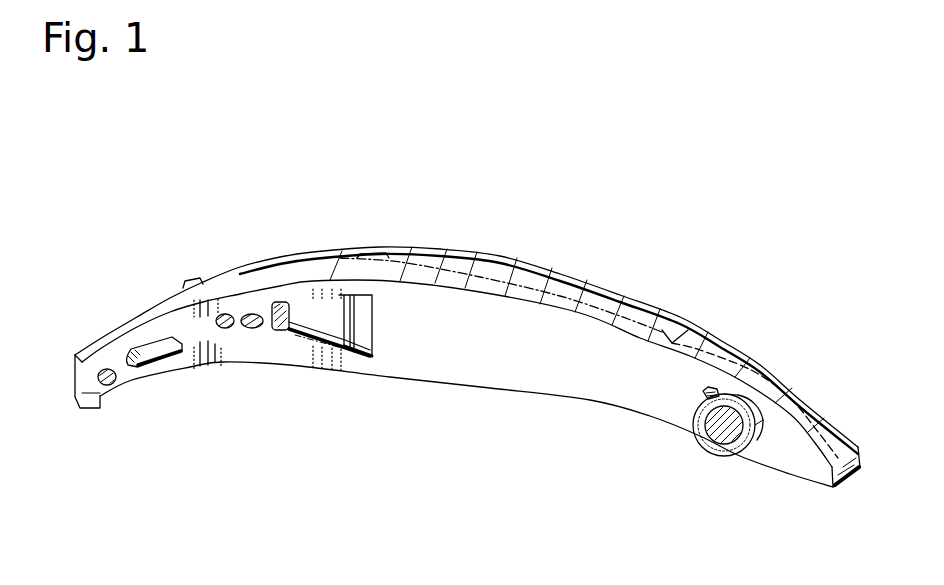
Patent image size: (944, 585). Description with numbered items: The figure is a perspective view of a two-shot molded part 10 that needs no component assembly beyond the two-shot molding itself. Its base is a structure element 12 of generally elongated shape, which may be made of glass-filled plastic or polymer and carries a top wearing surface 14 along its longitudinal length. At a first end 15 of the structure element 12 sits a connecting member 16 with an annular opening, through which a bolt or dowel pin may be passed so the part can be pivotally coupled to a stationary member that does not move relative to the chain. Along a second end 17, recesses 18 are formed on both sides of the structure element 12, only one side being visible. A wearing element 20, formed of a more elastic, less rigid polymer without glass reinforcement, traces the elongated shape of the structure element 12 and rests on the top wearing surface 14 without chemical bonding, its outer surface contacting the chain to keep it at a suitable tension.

The 2-shot molded part 10 is at (693, 288).
The structure element 12 is at (492, 350).
The top wearing surface 14 is at (510, 303).
The first end 15 is at (657, 405).
The connecting member 16 is at (730, 467).
The second end 17 is at (270, 355).
The recesses 18 is at (322, 332).
The wearing element 20 is at (665, 329).